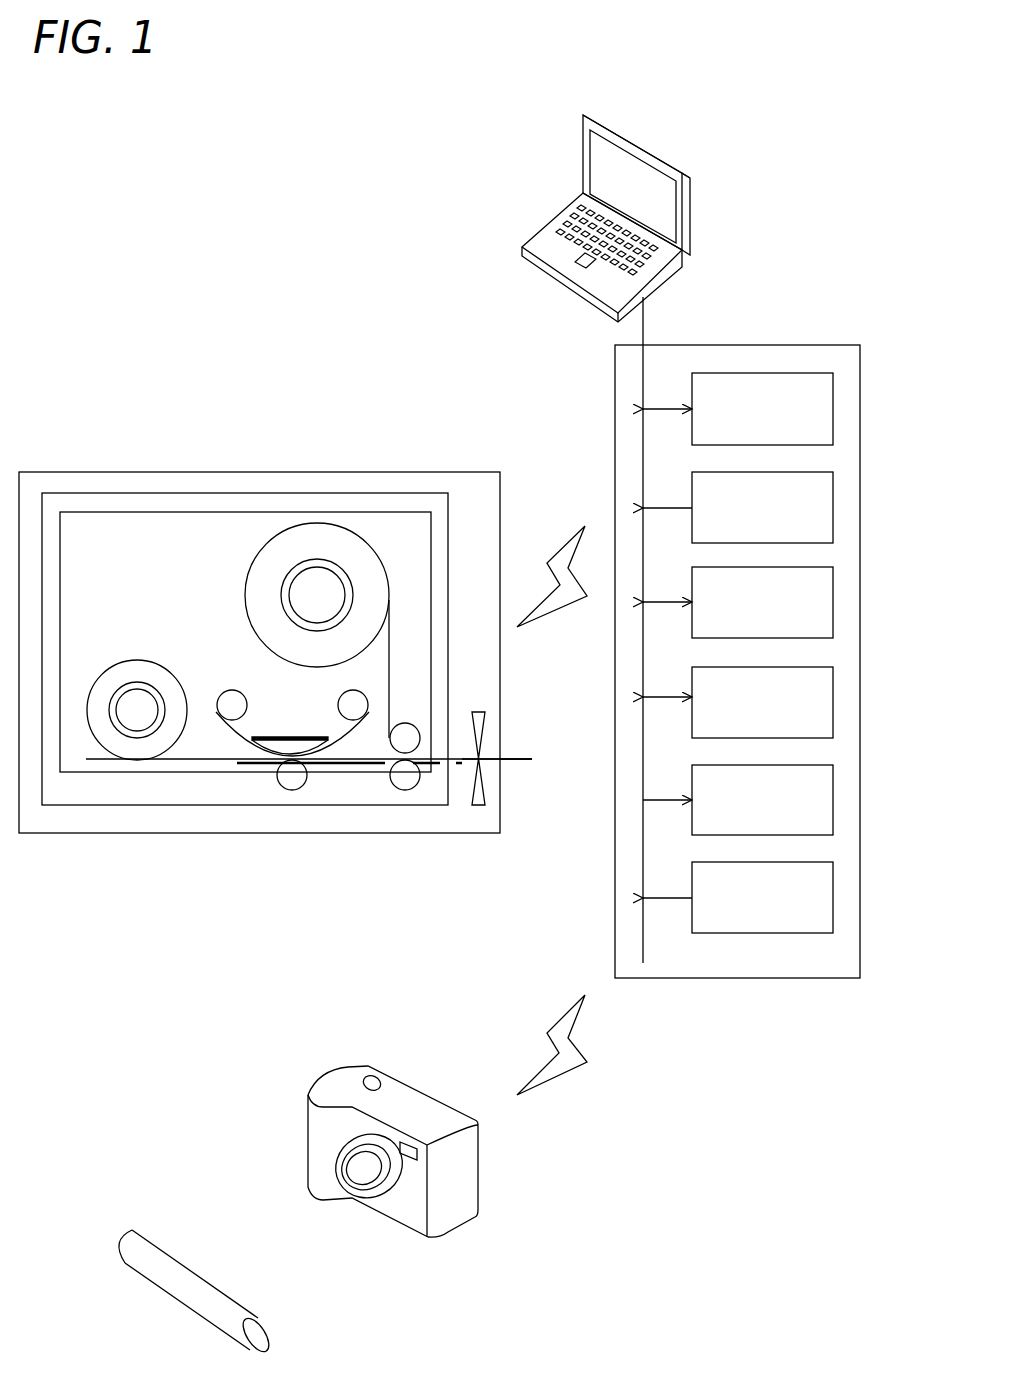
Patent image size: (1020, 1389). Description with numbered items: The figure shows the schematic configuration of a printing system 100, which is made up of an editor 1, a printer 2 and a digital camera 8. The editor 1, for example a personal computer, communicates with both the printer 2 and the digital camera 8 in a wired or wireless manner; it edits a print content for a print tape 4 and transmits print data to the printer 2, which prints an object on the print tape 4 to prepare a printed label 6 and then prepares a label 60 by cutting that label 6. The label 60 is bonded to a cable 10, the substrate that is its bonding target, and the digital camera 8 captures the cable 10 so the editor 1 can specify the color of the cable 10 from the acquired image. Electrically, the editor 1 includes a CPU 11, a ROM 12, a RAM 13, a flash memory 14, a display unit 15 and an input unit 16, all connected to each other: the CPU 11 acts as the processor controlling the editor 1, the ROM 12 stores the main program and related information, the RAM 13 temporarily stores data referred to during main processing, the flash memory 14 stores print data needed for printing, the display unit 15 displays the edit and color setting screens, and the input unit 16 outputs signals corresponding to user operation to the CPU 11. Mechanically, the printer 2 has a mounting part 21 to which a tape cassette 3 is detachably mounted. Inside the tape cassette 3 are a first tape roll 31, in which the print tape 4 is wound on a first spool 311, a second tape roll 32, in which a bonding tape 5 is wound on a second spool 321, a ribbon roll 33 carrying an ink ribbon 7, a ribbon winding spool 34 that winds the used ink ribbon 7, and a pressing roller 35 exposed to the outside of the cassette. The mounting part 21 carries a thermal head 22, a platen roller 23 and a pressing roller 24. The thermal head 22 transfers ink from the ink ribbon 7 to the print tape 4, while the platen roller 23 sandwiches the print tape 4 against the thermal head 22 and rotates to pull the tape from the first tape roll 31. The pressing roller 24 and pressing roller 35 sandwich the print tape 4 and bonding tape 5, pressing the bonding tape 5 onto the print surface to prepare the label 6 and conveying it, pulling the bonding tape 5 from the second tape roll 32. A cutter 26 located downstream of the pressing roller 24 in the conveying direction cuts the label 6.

The printing system 100 is at (320, 200).
The editor 1 is at (605, 198).
The printer 2 is at (287, 437).
The mounting part 21 is at (215, 493).
The tape cassette 3 is at (378, 512).
The second tape roll 32 is at (278, 595).
The second spool 321 is at (283, 594).
The first tape roll 31 is at (159, 669).
The first spool 311 is at (160, 688).
The ribbon roll 33 is at (242, 697).
The ribbon winding spool 34 is at (338, 704).
The bonding tape 5 is at (392, 677).
The ink ribbon 7 is at (333, 733).
The print tape 4 is at (205, 760).
The thermal head 22 is at (233, 776).
The platen roller 23 is at (292, 790).
The pressing roller 35 is at (393, 725).
The pressing roller 24 is at (405, 790).
The label 6 is at (453, 760).
The label 60 is at (518, 757).
The cutter 26 is at (487, 790).
The CPU 11 is at (834, 405).
The ROM 12 is at (834, 505).
The RAM 13 is at (834, 600).
The flash memory 14 is at (834, 696).
The display unit 15 is at (633, 175).
The input unit 16 is at (573, 213).
The digital camera 8 is at (400, 1065).
The cable 10 is at (177, 1262).